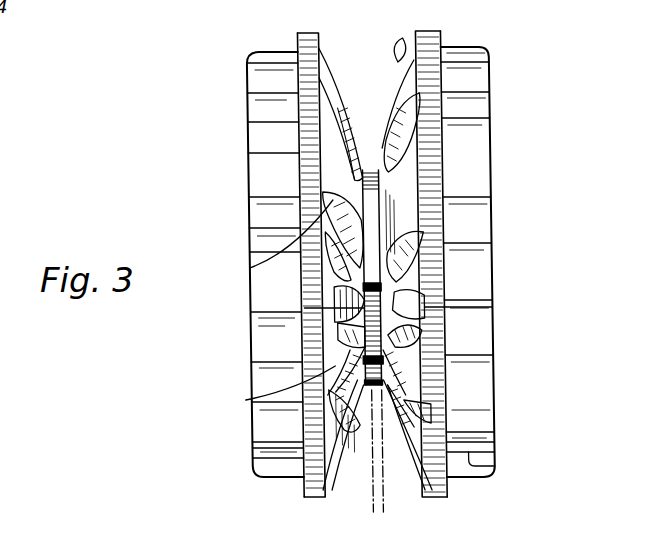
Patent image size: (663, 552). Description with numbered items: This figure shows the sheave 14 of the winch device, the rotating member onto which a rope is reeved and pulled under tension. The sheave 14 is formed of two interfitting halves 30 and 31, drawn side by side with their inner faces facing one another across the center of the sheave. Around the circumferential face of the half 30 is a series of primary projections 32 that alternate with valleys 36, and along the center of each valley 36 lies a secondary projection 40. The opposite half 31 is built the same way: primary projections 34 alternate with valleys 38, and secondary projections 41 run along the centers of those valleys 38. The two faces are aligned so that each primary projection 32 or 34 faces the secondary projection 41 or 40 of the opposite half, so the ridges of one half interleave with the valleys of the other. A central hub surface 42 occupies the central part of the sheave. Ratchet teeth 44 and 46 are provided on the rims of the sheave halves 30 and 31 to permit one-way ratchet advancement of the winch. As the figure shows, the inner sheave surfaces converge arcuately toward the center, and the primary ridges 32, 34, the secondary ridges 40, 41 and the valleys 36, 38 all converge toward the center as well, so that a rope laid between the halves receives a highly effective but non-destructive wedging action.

The sheave 14 is at (522, 72).
The sheave half 30 is at (246, 73).
The sheave half 31 is at (476, 406).
The primary projections 32 is at (329, 73).
The primary projections 34 is at (404, 82).
The valleys 36 is at (330, 206).
The valleys 38 is at (376, 186).
The secondary projections 40 is at (330, 265).
The secondary projections 41 is at (492, 298).
The central hub surface 42 is at (374, 249).
The ratchet teeth 44 is at (247, 473).
The ratchet teeth 46 is at (486, 467).